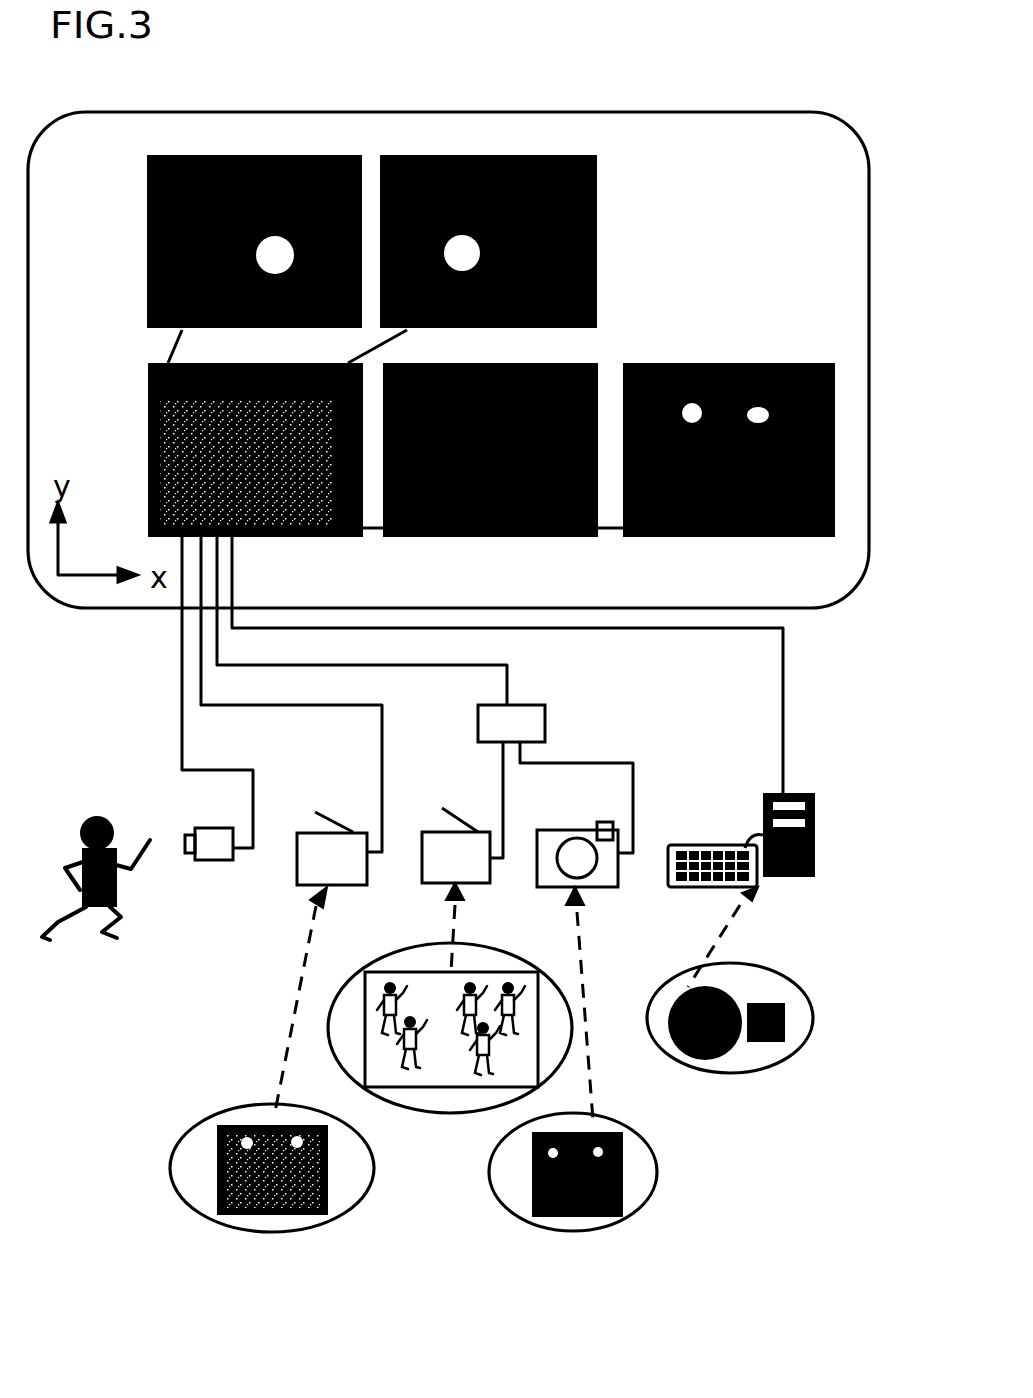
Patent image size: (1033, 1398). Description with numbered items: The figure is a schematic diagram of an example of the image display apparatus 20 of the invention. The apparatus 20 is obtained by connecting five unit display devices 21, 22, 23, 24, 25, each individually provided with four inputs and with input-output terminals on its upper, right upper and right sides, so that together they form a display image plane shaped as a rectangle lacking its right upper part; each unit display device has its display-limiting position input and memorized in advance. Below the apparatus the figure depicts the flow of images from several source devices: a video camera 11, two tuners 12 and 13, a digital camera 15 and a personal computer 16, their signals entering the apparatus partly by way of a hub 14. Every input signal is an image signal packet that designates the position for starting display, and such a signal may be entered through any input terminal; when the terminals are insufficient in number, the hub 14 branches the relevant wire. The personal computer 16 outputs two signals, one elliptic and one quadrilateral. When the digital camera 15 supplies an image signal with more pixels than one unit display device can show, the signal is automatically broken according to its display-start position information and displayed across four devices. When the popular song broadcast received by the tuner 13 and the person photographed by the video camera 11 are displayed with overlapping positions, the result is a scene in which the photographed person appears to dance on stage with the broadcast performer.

The video camera 11 is at (229, 862).
The tuner 12 is at (272, 1022).
The tuner 13 is at (450, 960).
The hub 14 is at (511, 725).
The digital camera 15 is at (592, 830).
The personal computer 16 is at (763, 822).
The image display apparatus 20 is at (425, 112).
The unit display device 21 is at (273, 537).
The unit display device 22 is at (480, 537).
The unit display device 23 is at (735, 333).
The unit display device 24 is at (147, 195).
The unit display device 25 is at (597, 205).